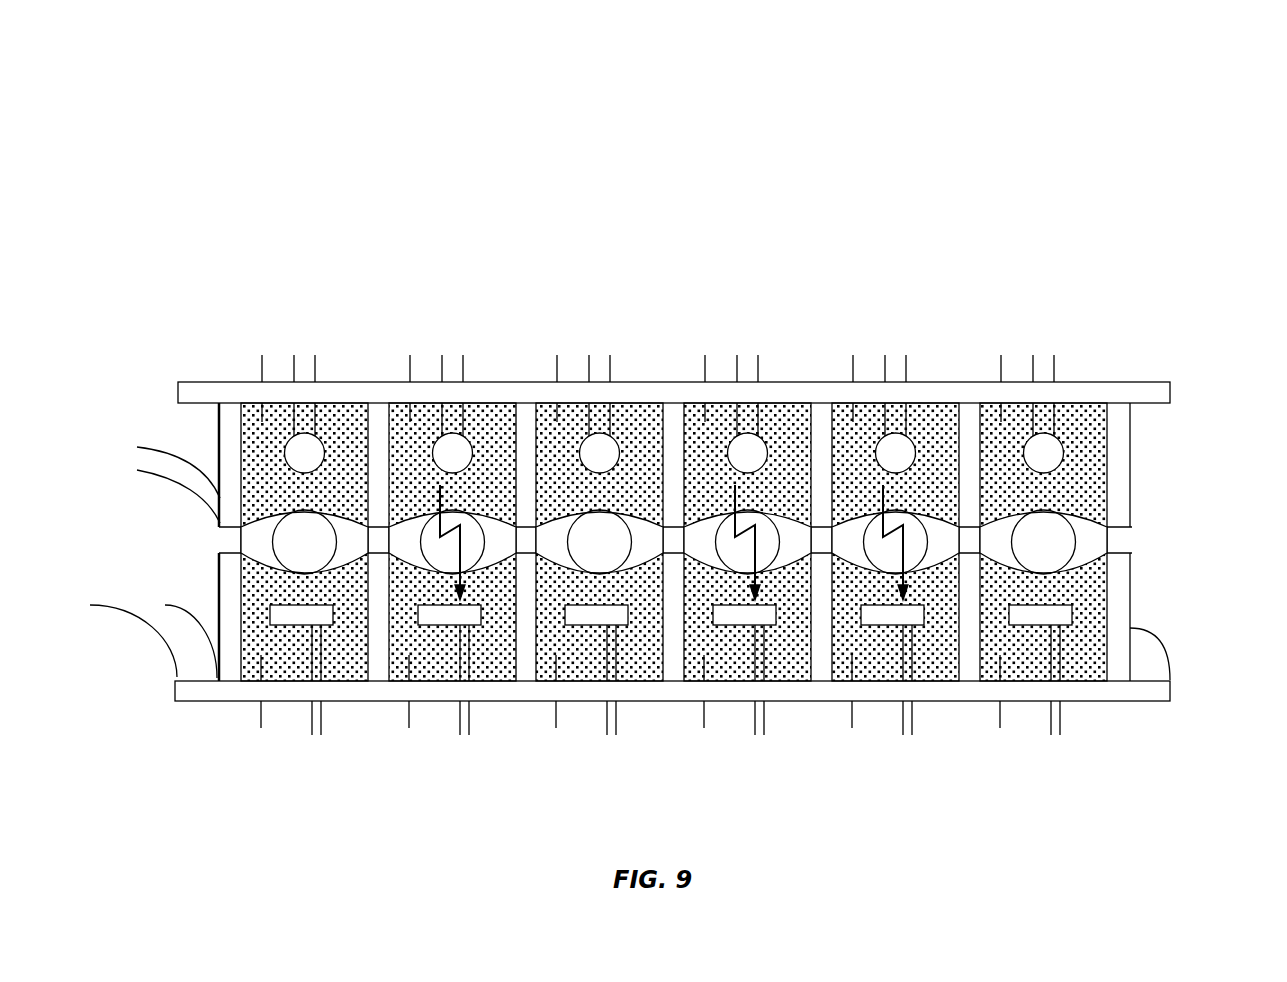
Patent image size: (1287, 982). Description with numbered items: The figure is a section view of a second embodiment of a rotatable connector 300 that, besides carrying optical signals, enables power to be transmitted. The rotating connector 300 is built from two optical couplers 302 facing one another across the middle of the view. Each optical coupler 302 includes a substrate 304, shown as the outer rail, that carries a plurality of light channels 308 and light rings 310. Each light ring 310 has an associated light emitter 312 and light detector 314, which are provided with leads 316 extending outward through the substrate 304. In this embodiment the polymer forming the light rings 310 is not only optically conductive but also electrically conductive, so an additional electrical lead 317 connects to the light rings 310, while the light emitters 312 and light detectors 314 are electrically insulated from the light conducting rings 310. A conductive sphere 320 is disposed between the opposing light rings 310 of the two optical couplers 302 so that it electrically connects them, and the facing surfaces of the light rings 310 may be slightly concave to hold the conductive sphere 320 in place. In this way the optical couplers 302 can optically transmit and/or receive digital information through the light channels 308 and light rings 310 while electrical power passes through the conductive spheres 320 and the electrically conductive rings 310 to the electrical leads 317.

The rotatable connector 300 is at (810, 131).
The optical coupler 302 is at (377, 306).
The substrate 304 is at (647, 382).
The light channel 308 is at (240, 487).
The light ring 310 is at (1083, 585).
The light emitter 312 is at (1063, 455).
The light detector 314 is at (280, 603).
The lead 316 is at (1055, 370).
The electrical lead 317 is at (1000, 370).
The conductive sphere 320 is at (1055, 528).